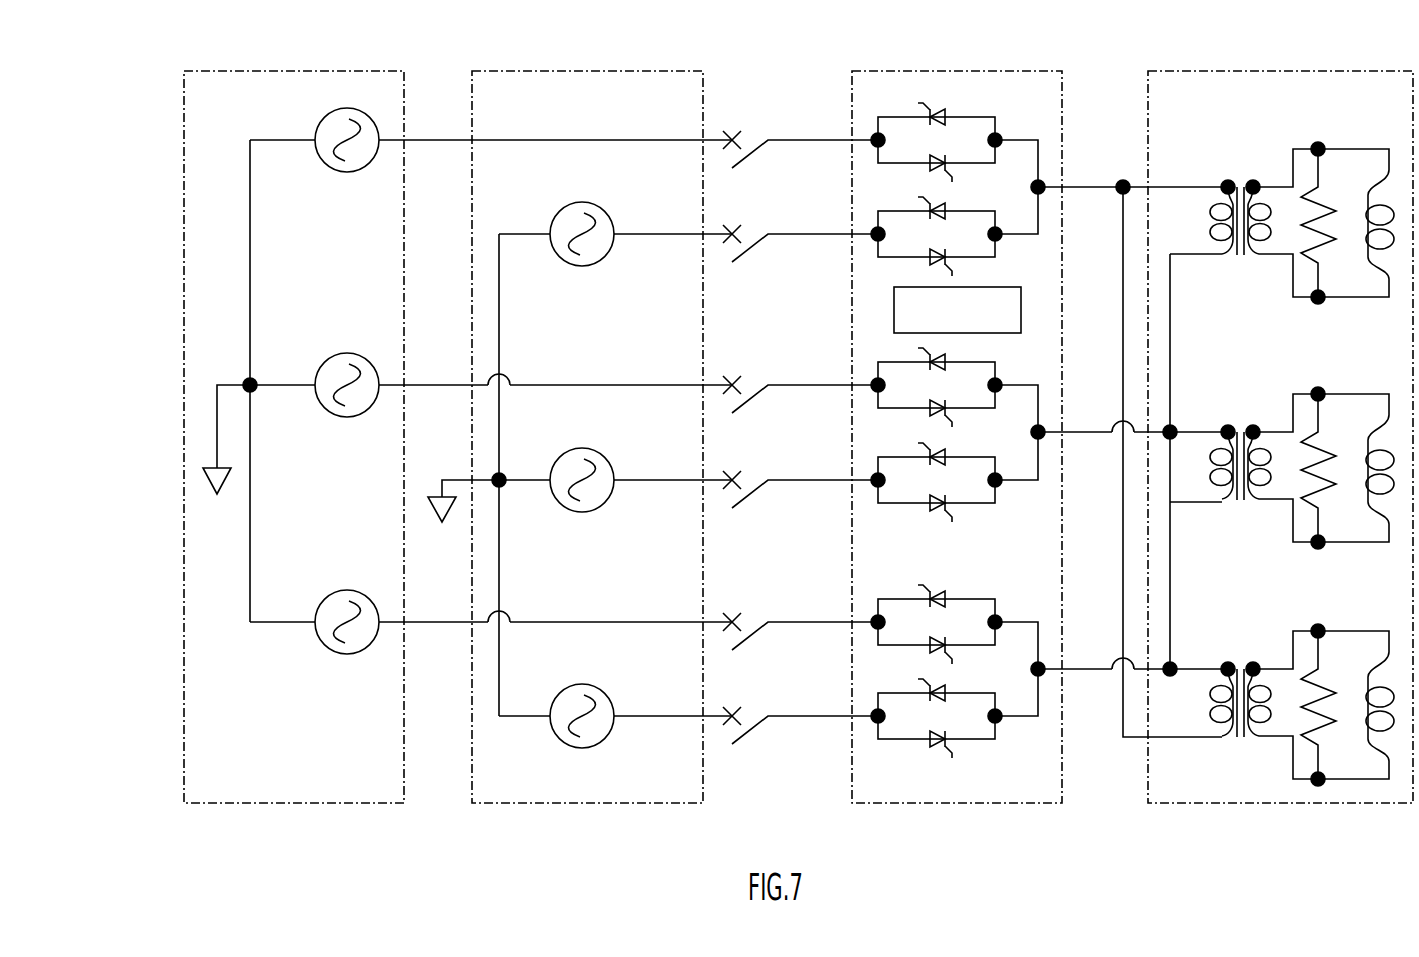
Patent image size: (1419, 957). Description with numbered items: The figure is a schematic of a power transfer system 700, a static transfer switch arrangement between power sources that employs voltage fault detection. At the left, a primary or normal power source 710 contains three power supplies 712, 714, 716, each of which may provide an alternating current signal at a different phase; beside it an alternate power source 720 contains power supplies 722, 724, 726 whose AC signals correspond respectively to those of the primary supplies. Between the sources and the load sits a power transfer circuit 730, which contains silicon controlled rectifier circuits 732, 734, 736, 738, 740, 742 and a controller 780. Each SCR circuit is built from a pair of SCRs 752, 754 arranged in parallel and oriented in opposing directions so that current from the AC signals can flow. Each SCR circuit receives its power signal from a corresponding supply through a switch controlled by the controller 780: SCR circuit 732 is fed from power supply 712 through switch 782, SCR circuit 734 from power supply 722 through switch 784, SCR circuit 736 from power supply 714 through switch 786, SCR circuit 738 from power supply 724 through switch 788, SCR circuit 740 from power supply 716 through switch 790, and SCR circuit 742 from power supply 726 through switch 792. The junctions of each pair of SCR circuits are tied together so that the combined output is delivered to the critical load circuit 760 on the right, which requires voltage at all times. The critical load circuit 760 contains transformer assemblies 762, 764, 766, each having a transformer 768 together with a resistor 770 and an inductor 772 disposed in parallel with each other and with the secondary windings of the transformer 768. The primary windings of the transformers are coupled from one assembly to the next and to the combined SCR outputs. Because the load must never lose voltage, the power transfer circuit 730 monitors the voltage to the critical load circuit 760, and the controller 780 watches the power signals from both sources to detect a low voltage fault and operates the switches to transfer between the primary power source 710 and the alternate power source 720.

The power transfer system 700 is at (140, 77).
The primary power source 710 is at (385, 70).
The power supply 712 is at (368, 164).
The power supply 714 is at (368, 409).
The power supply 716 is at (368, 646).
The alternate power source 720 is at (643, 71).
The power supply 722 is at (603, 258).
The power supply 724 is at (603, 504).
The power supply 726 is at (603, 740).
The power transfer circuit 730 is at (992, 71).
The silicon controlled rectifier circuit 732 is at (953, 137).
The silicon controlled rectifier circuit 734 is at (998, 256).
The silicon controlled rectifier circuit 736 is at (997, 369).
The silicon controlled rectifier circuit 738 is at (997, 497).
The silicon controlled rectifier circuit 740 is at (997, 600).
The silicon controlled rectifier circuit 742 is at (997, 739).
The SCR 752 is at (920, 103).
The SCR 754 is at (932, 168).
The critical load circuit 760 is at (1190, 71).
The transformer assembly 762 is at (1283, 198).
The transformer assembly 764 is at (1276, 388).
The transformer assembly 766 is at (1276, 625).
The transformer 768 is at (1205, 172).
The resistor 770 is at (1330, 215).
The inductor 772 is at (1368, 256).
The controller 780 is at (894, 318).
The switch 782 is at (744, 159).
The switch 784 is at (744, 253).
The switch 786 is at (744, 404).
The switch 788 is at (744, 499).
The switch 790 is at (744, 641).
The switch 792 is at (744, 735).